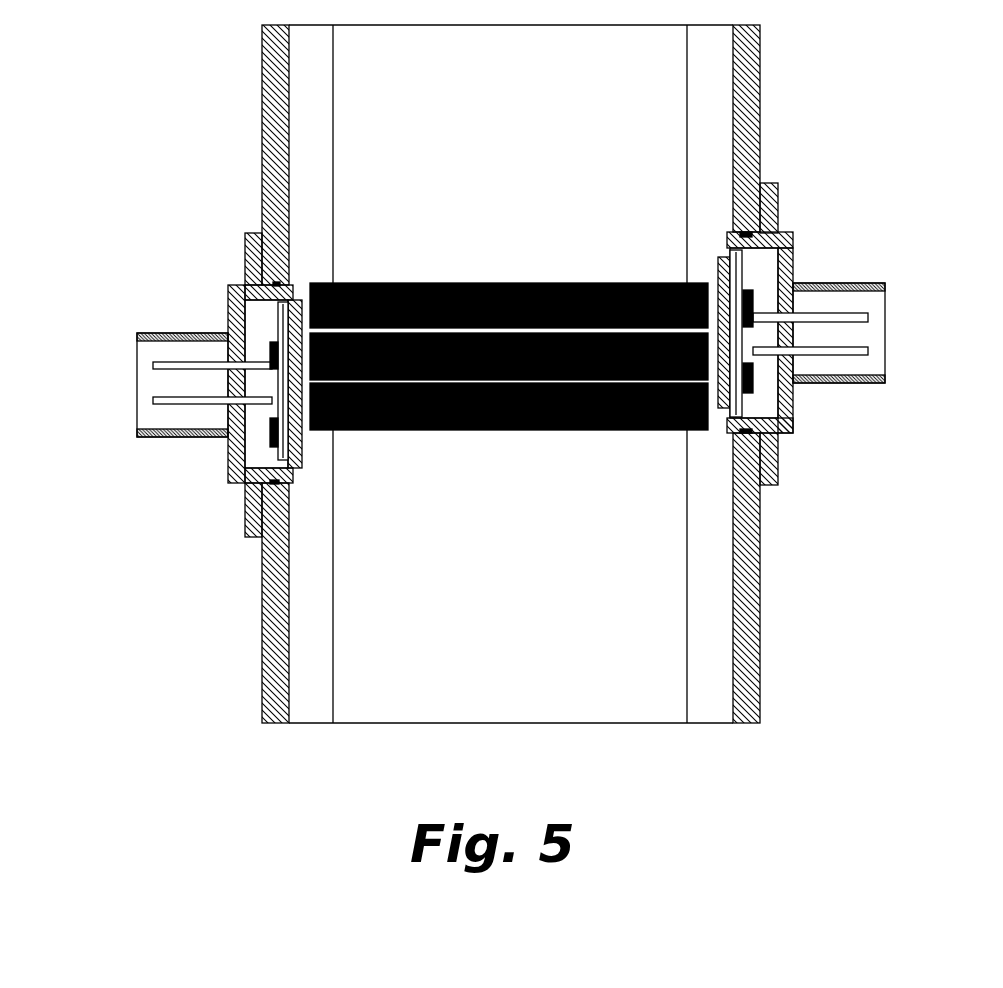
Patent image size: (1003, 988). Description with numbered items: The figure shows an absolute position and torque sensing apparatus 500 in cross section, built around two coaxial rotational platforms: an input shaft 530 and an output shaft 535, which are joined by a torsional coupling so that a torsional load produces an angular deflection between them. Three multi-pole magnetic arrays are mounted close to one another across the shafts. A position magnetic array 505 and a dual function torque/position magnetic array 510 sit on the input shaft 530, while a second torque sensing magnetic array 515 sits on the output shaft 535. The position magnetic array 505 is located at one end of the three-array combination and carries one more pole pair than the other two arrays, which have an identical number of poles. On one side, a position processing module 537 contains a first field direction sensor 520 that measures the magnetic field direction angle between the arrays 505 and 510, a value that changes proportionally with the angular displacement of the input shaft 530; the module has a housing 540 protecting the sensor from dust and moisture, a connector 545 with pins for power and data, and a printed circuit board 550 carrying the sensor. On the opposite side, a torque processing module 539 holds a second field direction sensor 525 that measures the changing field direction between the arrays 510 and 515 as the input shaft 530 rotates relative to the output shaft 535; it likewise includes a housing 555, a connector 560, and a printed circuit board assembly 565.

The absolute position and torque sensing apparatus 500 is at (121, 629).
The position magnetic array 505 is at (509, 281).
The dual function torque/position magnetic array 510 is at (385, 432).
The second torque sensing magnetic array 515 is at (455, 432).
The first field direction sensor 520 is at (755, 397).
The second field direction sensor 525 is at (285, 393).
The input shaft 530 is at (530, 118).
The output shaft 535 is at (523, 668).
The position processing module 537 is at (854, 330).
The torque processing module 539 is at (166, 369).
The housing 540 is at (783, 252).
The connector 545 is at (852, 352).
The printed circuit board 550 is at (738, 287).
The housing 555 is at (233, 315).
The connector 560 is at (167, 402).
The printed circuit board assembly 565 is at (243, 270).